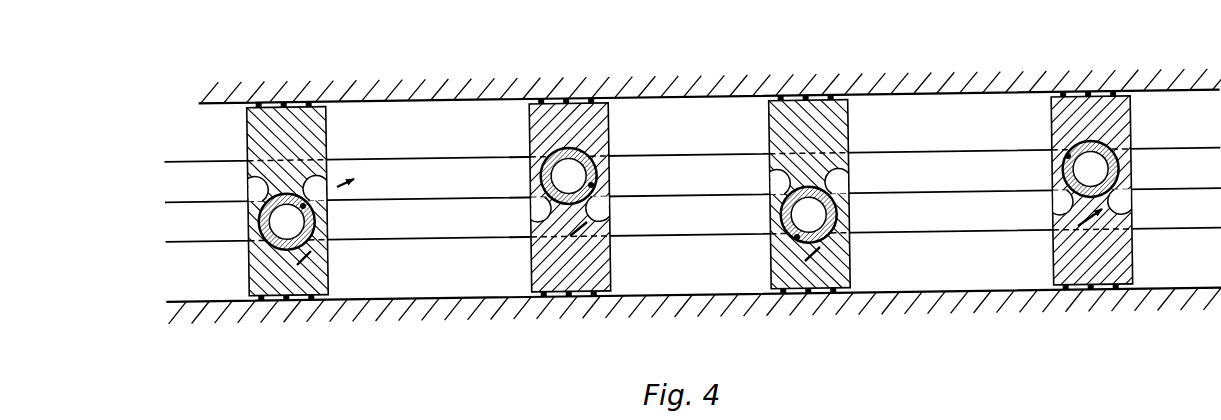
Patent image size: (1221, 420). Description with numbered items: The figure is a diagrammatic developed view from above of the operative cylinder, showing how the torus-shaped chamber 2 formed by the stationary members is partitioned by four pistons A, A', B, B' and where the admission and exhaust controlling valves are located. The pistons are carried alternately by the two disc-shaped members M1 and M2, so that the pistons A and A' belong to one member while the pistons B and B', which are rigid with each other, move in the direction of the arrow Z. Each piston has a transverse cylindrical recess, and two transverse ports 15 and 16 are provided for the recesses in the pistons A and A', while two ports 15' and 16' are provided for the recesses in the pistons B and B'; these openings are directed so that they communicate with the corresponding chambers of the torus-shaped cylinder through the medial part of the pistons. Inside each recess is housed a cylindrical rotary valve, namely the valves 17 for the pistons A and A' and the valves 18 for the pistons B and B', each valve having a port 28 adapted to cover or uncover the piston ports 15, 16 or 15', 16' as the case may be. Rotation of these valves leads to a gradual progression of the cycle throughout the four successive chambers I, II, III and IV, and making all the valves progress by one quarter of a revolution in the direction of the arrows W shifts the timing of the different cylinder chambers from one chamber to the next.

The torus-shaped chamber 2 is at (887, 265).
The transverse port 15 is at (491, 176).
The transverse port 16 is at (603, 169).
The transverse port 15' is at (774, 190).
The transverse port 16' is at (887, 193).
The cylindrical rotary valve 17 is at (258, 208).
The cylindrical rotary valve 18 is at (545, 205).
The valve port 28 is at (303, 206).
The piston A is at (254, 201).
The piston A' is at (781, 194).
The piston B is at (556, 197).
The piston B' is at (1071, 190).
The arrow indicating valve rotation direction W is at (699, 243).
The arrow indicating piston movement direction Z is at (1022, 337).
The disc-shaped member M1 is at (412, 227).
The disc-shaped member M2 is at (435, 175).
The cylinder chamber I is at (426, 130).
The cylinder chamber II is at (690, 127).
The cylinder chamber III is at (931, 124).
The cylinder chamber IV is at (1209, 114).